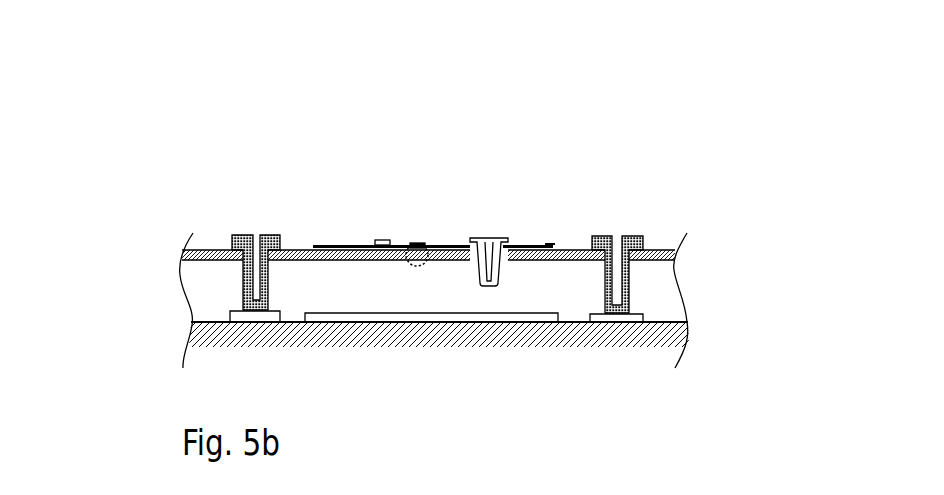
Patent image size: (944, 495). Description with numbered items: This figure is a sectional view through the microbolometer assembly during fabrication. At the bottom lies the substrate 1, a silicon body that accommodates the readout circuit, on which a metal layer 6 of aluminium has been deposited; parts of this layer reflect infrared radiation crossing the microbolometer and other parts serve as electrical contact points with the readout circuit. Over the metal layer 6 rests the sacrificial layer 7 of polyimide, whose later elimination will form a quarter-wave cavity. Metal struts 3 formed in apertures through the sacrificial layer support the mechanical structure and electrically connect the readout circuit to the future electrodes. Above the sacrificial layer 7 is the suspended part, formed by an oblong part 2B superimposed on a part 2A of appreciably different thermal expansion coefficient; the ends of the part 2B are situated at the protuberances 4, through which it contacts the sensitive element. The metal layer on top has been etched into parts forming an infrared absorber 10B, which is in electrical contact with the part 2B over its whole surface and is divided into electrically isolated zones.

The substrate 1 is at (280, 328).
The part of the suspended part 2A is at (422, 236).
The oblong surface of layer eleven 2B is at (383, 236).
The struts 3 is at (633, 233).
The protuberances 4 is at (502, 278).
The metal layer 6 is at (374, 318).
The sacrificial layer 7 is at (430, 295).
The infrared absorber 10B is at (298, 247).